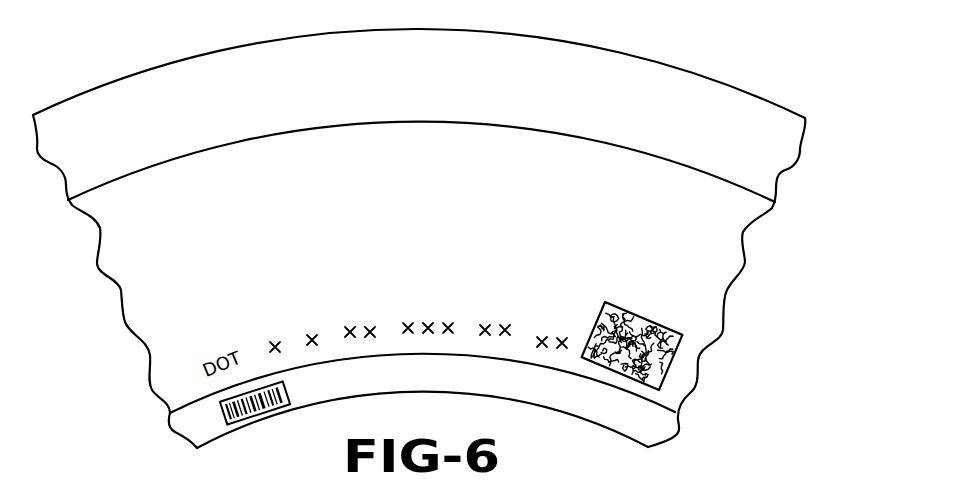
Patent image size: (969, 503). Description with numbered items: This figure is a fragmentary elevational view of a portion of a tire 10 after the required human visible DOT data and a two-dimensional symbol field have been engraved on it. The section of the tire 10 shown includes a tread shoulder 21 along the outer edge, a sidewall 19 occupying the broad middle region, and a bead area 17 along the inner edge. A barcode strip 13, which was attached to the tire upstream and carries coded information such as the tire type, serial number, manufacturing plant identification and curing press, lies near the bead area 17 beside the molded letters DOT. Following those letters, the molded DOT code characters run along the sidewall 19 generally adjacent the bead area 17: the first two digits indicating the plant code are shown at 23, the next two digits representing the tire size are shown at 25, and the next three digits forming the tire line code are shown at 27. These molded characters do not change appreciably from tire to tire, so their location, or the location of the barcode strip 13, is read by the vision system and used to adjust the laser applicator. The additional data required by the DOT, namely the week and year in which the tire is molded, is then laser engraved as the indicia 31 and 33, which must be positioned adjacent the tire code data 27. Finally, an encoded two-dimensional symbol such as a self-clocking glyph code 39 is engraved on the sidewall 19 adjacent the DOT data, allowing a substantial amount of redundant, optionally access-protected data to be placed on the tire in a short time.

The tire 10 is at (674, 58).
The tread shoulder 21 is at (713, 107).
The sidewall 19 is at (695, 263).
The bead area 17 is at (553, 398).
The barcode strip 13 is at (248, 426).
The plant code characters 23 is at (311, 333).
The tire size characters 25 is at (370, 326).
The tire line code characters 27 is at (430, 322).
The week indicia 31 is at (506, 325).
The year indicia 33 is at (563, 337).
The self-clocking glyph code 39 is at (650, 315).